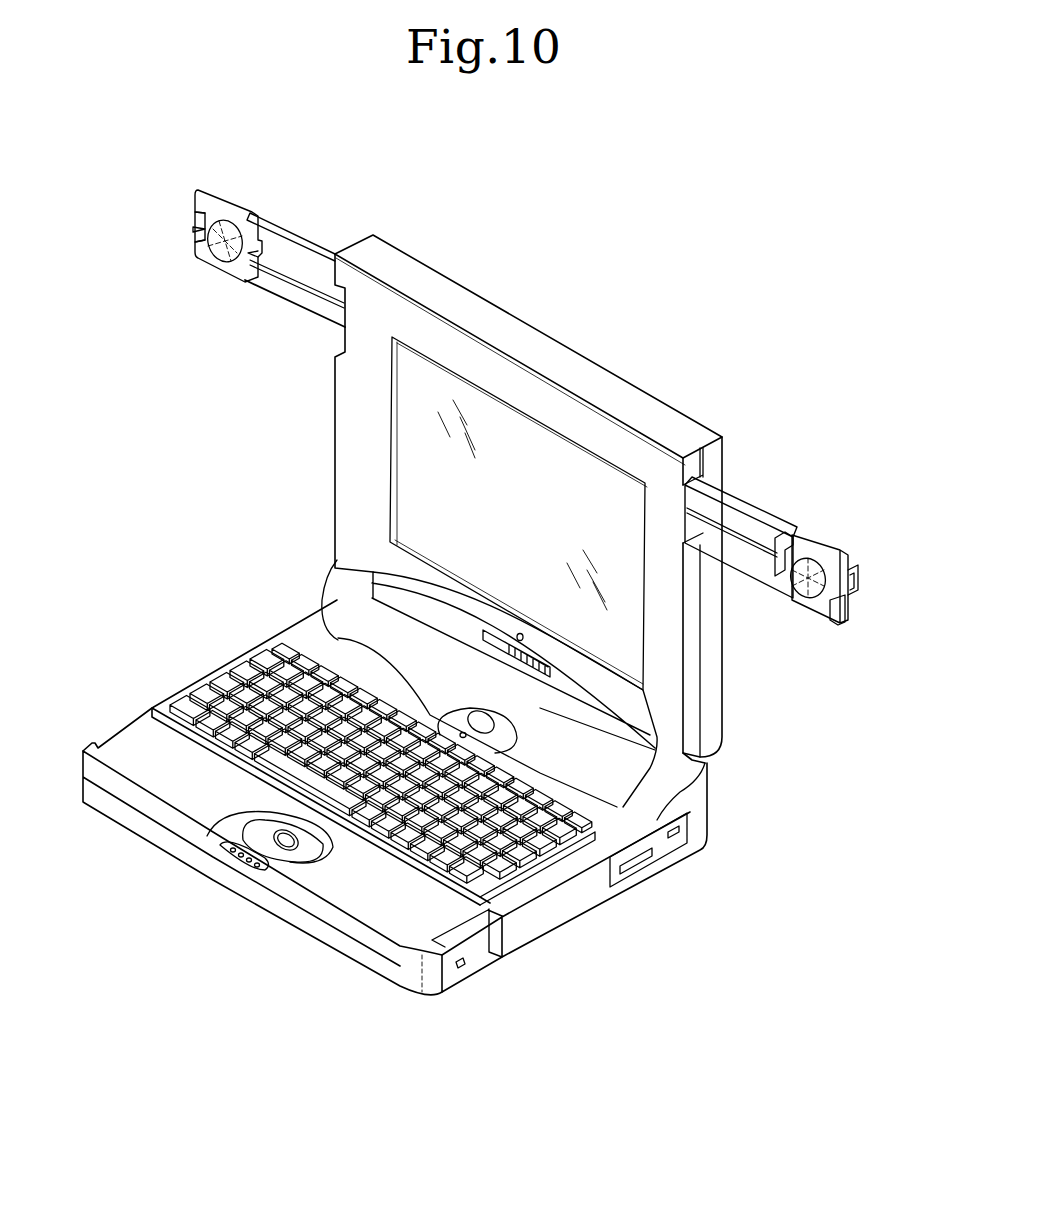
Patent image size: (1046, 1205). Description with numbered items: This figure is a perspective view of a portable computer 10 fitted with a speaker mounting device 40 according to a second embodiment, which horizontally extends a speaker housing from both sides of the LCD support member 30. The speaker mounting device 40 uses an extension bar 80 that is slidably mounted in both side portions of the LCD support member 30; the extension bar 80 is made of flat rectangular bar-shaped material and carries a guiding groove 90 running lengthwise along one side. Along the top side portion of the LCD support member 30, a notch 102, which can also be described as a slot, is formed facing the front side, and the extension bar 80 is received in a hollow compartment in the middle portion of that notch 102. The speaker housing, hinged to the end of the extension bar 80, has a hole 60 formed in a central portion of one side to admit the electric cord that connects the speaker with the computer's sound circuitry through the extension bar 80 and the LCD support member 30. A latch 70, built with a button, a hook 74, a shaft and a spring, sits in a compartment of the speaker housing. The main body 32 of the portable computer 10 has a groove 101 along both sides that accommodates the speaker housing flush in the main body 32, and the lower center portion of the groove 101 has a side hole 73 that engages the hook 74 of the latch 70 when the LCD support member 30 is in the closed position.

The portable computer 10 is at (202, 628).
The LCD support member 30 is at (556, 350).
The main body 32 is at (127, 757).
The speaker mounting device 40 is at (835, 532).
The hole 60 is at (788, 533).
The latch 70 is at (856, 586).
The side hole 73 is at (467, 963).
The hook 74 is at (836, 624).
The extension bar 80 is at (756, 482).
The guiding groove 90 is at (752, 550).
The groove 101 is at (533, 946).
The notch 102 is at (688, 550).